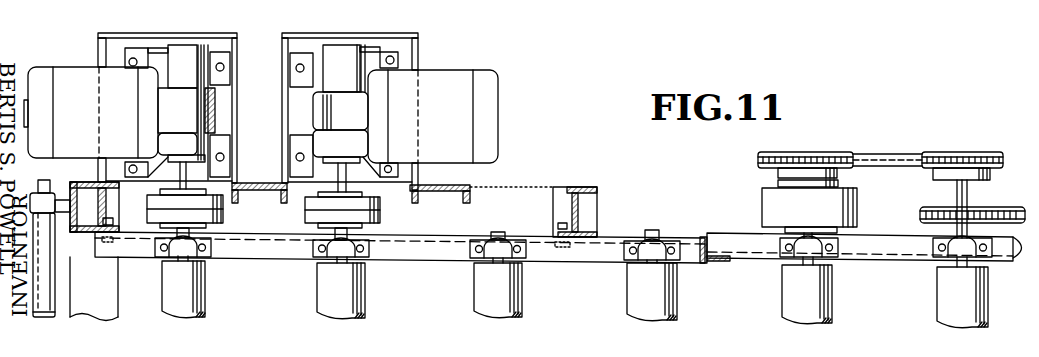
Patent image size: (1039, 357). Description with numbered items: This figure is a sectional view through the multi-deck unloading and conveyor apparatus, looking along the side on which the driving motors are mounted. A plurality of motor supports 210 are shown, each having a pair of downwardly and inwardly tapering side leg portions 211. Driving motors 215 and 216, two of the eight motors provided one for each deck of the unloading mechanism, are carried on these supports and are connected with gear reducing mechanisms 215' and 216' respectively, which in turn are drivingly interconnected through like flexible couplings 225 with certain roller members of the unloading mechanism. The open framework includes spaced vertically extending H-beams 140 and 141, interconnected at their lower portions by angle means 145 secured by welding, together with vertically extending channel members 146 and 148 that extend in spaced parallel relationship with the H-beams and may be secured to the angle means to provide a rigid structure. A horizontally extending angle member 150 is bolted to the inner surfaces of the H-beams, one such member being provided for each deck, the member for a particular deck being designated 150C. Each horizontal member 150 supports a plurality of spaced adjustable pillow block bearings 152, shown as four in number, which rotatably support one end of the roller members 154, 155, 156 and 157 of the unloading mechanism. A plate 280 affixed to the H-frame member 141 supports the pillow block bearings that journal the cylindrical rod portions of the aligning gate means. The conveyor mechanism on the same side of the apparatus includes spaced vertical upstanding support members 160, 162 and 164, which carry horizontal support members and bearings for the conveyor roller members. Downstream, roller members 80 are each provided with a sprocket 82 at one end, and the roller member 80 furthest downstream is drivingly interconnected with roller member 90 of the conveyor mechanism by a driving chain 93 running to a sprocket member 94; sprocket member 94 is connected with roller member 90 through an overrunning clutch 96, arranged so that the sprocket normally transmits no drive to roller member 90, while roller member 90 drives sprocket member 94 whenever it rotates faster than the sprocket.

The conveyor drive section 150C is at (122, 6).
The motor support 210 is at (175, 27).
The side leg portion 211 is at (99, 49).
The driving motor 216 is at (85, 98).
The gear reducing mechanism 216' is at (208, 112).
The driving motor 215 is at (448, 103).
The gear reducing mechanism 215' is at (322, 111).
The plate 280 is at (67, 180).
The H-beam 141 is at (76, 235).
The channel member 148 is at (256, 190).
The channel member 146 is at (423, 192).
The angle means 145 is at (489, 205).
The H-beam 140 is at (567, 187).
The horizontal angle member 150 is at (282, 258).
The vertical support member 160 is at (717, 252).
The vertical support member 162 is at (1019, 250).
The pillow block bearing 152 is at (204, 251).
The vertical support member 164 is at (940, 248).
The flexible coupling 225 is at (156, 215).
The roller member 157 is at (195, 287).
The roller member 156 is at (355, 300).
The roller member 155 is at (507, 292).
The roller member 154 is at (655, 290).
The roller member 90 is at (817, 292).
The roller member 80 is at (970, 300).
The sprocket member 94 is at (830, 153).
The driving chain 93 is at (965, 135).
The overrunning clutch 96 is at (857, 207).
The sprocket 82 is at (1000, 210).